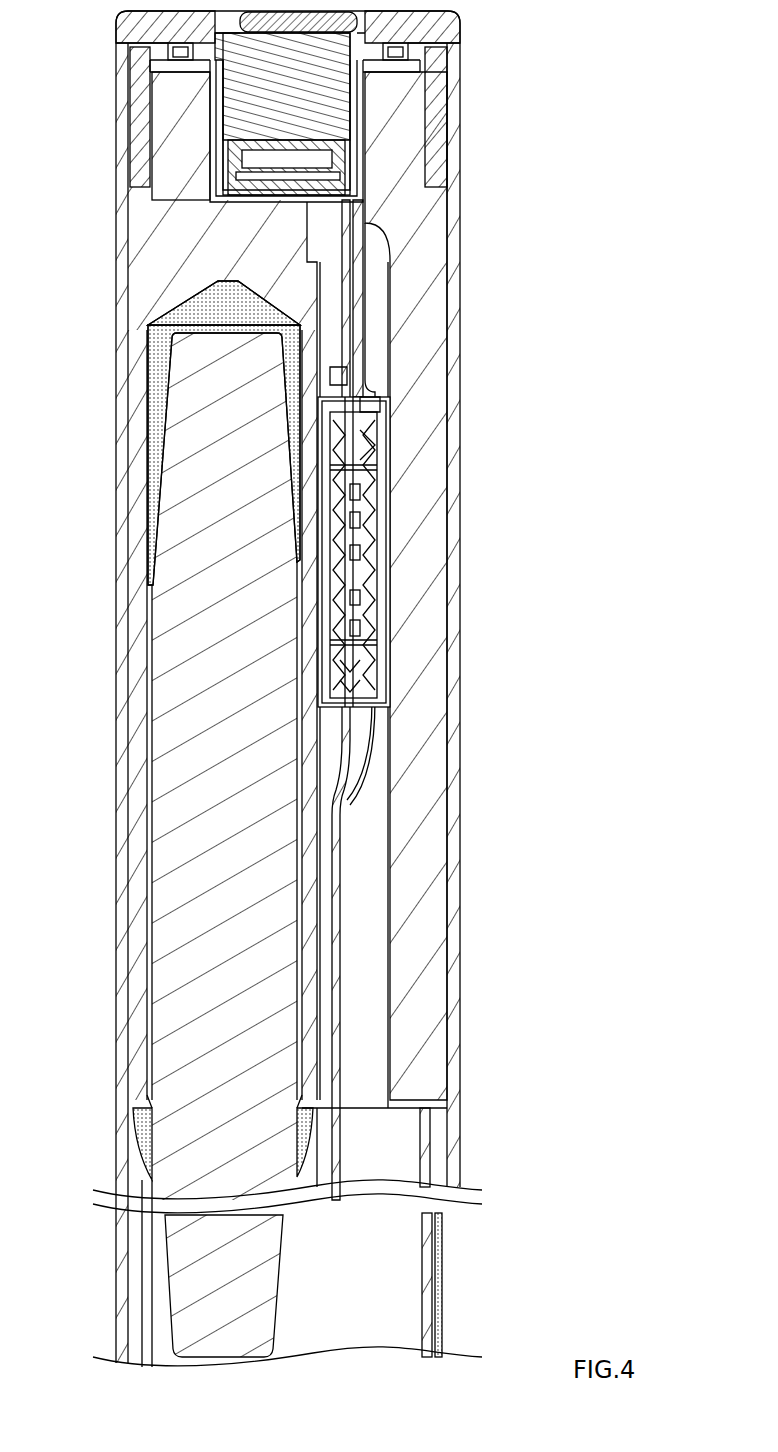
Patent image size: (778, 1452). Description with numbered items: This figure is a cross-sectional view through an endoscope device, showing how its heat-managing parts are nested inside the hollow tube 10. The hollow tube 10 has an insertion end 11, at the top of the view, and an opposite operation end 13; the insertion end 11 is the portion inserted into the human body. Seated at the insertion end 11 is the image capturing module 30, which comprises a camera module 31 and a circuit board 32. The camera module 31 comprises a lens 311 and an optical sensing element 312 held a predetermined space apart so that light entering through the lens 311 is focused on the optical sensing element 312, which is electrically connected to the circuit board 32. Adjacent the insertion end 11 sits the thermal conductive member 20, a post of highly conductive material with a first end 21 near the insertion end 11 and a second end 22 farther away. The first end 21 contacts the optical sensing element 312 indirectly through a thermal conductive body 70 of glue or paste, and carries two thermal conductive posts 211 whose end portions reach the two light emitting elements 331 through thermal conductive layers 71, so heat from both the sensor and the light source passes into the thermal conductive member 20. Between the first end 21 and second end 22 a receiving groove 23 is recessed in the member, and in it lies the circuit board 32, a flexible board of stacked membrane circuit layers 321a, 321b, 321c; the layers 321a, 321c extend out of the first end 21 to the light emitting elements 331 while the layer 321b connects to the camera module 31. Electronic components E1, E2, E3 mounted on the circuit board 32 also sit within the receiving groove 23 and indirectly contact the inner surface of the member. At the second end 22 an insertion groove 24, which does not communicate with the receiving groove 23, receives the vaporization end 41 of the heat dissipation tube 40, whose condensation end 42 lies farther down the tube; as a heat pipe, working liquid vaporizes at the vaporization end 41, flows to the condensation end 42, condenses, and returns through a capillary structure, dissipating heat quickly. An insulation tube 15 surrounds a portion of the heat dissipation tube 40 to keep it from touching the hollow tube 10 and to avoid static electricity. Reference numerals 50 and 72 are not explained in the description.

The hollow tube 10 is at (116, 258).
The insertion end 11 is at (118, 50).
The operation end 13 is at (435, 1320).
The insulation tube 15 is at (425, 1240).
The thermal conductive member 20 is at (437, 738).
The first end 21 is at (310, 228).
The thermal conductive posts 211 is at (170, 142).
The second end 22 is at (447, 1115).
The receiving groove 23 is at (385, 808).
The insertion groove 24 is at (300, 852).
The image capturing module 30 is at (600, 110).
The camera module 31 is at (548, 95).
The lens 311 is at (330, 97).
The optical sensing element 312 is at (340, 125).
The circuit board 32 is at (556, 355).
The membrane circuit layer 321a is at (372, 383).
The membrane circuit layer 321b is at (378, 408).
The membrane circuit layer 321c is at (380, 448).
The light emitting elements 331 is at (455, 15).
The heat dissipation tube 40 is at (180, 598).
The vaporization end 41 is at (165, 378).
The condensation end 42 is at (190, 1288).
The mouthpiece cap 50 is at (120, 12).
The thermal conductive body 70 is at (305, 208).
The thermal conductive layer 71 is at (140, 75).
The absorbent cap 72 is at (170, 310).
The electronic component E1 is at (385, 535).
The electronic component E2 is at (375, 578).
The electronic component E3 is at (380, 640).